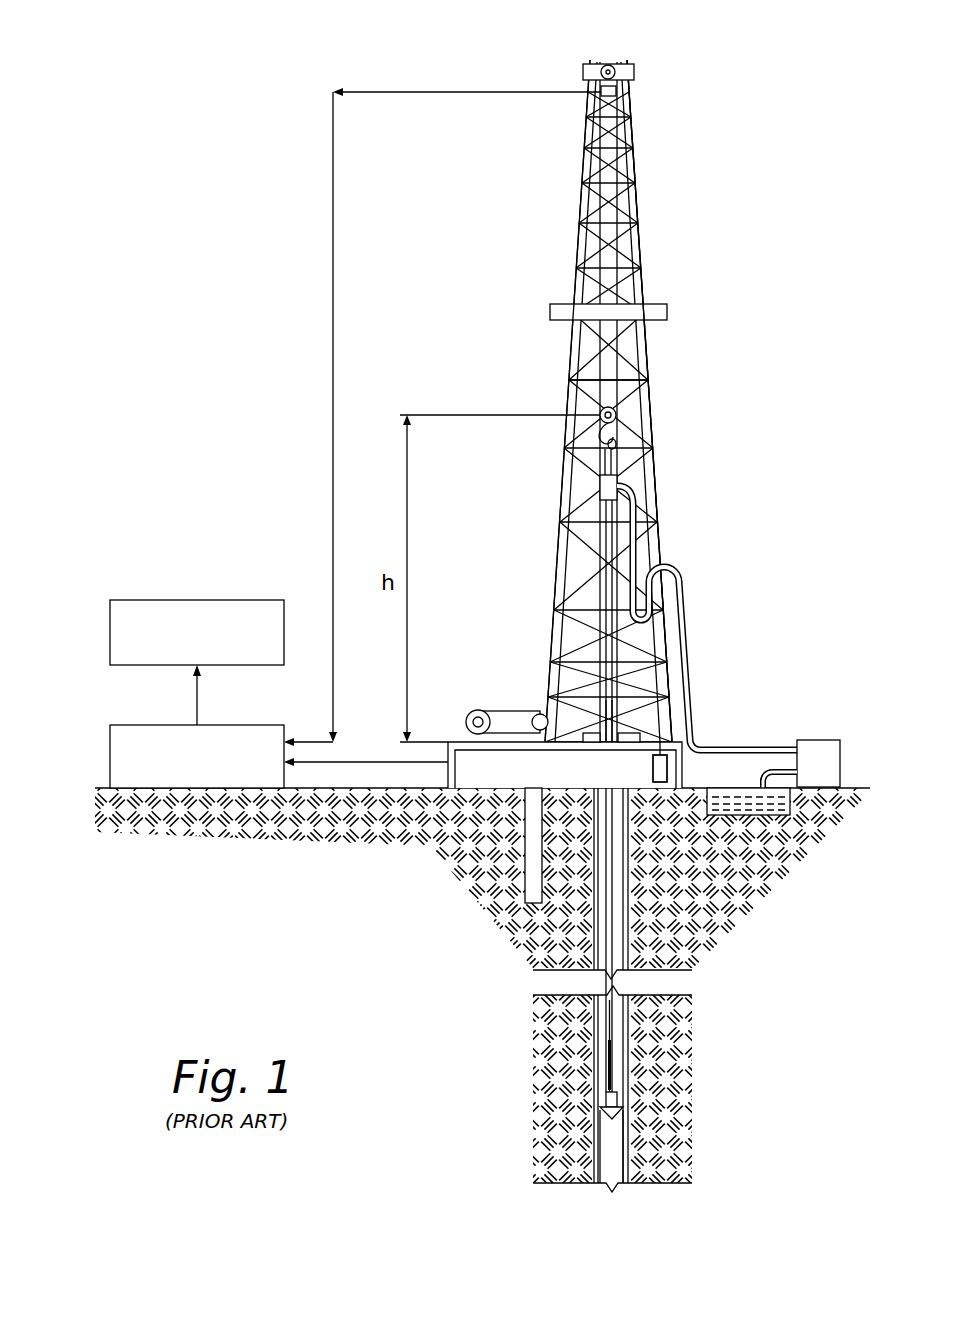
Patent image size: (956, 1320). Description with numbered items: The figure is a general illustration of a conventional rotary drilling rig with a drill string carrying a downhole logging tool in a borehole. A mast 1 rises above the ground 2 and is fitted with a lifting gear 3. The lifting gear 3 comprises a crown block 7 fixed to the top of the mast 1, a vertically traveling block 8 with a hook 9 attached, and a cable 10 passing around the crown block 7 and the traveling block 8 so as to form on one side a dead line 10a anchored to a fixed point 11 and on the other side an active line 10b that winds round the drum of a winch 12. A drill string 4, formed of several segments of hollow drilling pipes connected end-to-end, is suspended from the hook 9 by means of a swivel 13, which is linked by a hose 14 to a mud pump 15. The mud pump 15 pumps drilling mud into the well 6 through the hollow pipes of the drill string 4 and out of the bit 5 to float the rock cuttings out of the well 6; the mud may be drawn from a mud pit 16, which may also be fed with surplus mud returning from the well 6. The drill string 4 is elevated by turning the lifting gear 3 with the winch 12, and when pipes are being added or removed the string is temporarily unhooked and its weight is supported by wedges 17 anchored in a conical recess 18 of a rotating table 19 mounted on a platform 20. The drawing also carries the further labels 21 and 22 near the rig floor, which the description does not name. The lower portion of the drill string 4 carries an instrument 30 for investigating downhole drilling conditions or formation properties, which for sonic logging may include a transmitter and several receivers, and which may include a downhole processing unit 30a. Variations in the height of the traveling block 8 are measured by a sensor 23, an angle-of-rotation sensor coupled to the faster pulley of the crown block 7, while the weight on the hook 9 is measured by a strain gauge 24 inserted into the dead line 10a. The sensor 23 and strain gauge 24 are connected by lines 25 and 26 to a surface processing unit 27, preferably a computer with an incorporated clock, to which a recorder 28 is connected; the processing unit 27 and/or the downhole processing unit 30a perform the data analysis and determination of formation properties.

The mast 1 is at (657, 362).
The ground 2 is at (478, 788).
The lifting gear 3 is at (608, 372).
The drill string 4 is at (613, 1017).
The bit 5 is at (618, 1102).
The well 6 is at (612, 1160).
The crown block 7 is at (603, 66).
The traveling block 8 is at (600, 412).
The hook 9 is at (596, 442).
The cable 10 is at (641, 262).
The dead line 10a is at (652, 556).
The active line 10b is at (557, 550).
The fixed point 11 is at (656, 784).
The winch 12 is at (507, 714).
The swivel 13 is at (600, 487).
The hose 14 is at (690, 591).
The mud pump 15 is at (820, 740).
The mud pit 16 is at (738, 800).
The wedges 17 is at (597, 733).
The conical recess 18 is at (614, 735).
The rotating table 19 is at (586, 737).
The platform 20 is at (646, 740).
The kelly 21 is at (606, 587).
The mouse hole 22 is at (535, 800).
The sensor 23 is at (618, 92).
The strain gauge 24 is at (668, 768).
The line 25 is at (333, 272).
The line 26 is at (354, 762).
The processing unit 27 is at (175, 725).
The recorder 28 is at (175, 600).
The instrument 30 is at (613, 1068).
The downhole processing unit 30a is at (613, 1047).